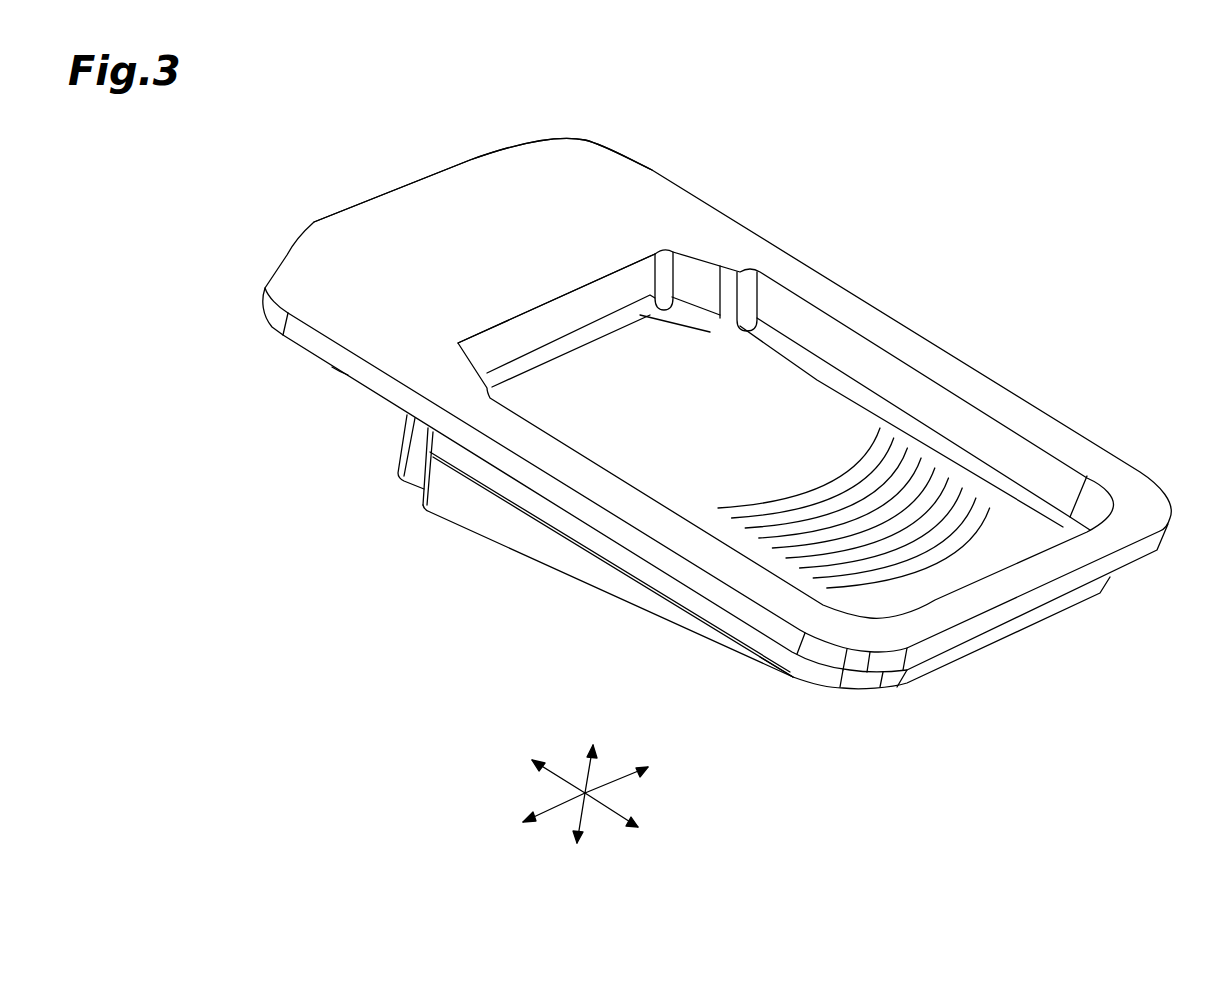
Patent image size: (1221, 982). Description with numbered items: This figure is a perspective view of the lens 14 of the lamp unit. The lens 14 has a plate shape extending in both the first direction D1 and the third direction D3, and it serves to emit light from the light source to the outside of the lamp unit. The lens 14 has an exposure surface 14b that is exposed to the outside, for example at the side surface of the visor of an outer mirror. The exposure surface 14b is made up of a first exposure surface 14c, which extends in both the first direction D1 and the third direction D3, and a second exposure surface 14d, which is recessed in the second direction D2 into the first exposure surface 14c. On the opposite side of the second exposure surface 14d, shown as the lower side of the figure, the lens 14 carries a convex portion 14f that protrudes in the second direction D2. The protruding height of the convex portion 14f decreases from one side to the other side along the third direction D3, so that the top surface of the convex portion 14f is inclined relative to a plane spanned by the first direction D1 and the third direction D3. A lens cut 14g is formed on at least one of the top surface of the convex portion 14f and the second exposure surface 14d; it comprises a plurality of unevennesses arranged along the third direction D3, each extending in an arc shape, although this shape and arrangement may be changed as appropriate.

The lens 14 is at (913, 203).
The exposure surface 14b is at (840, 126).
The first exposure surface 14c is at (663, 208).
The second exposure surface 14d is at (760, 380).
The convex portion 14f is at (458, 505).
The lens cut 14g is at (880, 428).
The first direction D1 is at (563, 805).
The second direction D2 is at (588, 818).
The third direction D3 is at (610, 807).